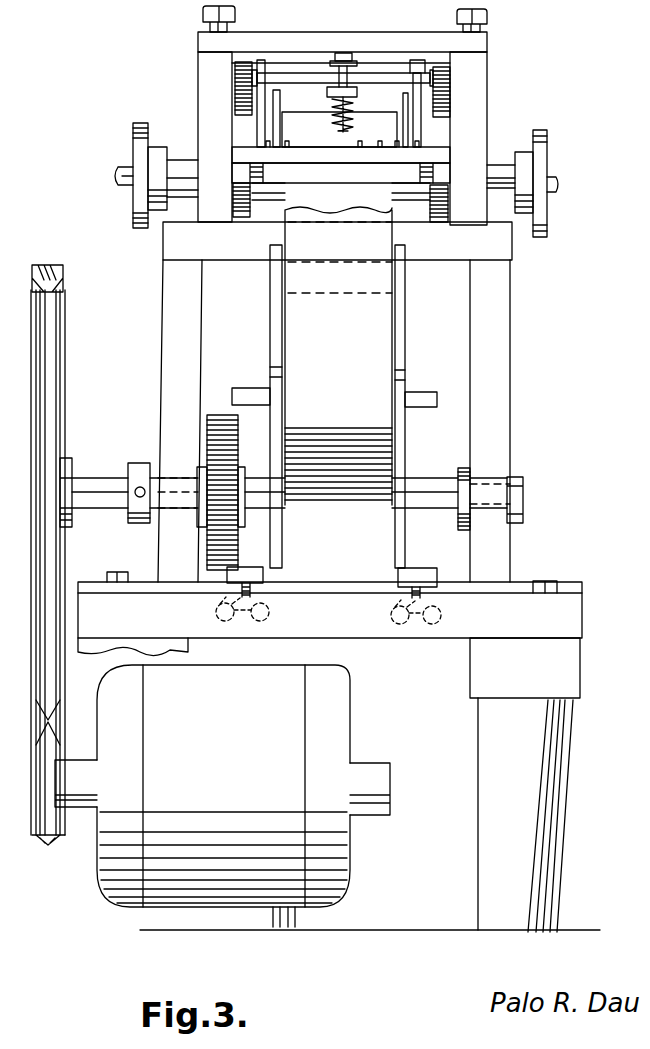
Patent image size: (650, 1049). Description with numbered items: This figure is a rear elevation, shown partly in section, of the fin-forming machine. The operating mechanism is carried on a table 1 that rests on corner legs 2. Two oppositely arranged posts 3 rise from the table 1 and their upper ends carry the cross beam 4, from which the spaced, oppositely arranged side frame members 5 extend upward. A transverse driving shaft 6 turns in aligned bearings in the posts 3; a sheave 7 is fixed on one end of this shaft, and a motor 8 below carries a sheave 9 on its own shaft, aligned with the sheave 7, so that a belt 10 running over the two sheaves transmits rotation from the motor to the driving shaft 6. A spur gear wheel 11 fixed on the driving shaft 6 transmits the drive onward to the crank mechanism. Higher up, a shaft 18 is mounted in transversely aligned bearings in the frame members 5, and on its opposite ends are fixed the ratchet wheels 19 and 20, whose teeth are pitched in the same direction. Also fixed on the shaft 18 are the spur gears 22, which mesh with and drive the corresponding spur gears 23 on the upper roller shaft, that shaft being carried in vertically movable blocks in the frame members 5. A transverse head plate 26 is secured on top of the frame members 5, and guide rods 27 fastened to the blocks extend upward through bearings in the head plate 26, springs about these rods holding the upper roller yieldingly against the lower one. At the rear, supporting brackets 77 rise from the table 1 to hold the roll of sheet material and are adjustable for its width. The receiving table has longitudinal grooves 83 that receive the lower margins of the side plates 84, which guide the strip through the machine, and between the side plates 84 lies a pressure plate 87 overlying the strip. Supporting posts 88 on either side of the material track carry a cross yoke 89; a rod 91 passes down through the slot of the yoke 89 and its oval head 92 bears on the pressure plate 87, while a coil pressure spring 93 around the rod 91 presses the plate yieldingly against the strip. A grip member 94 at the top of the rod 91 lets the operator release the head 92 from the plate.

The table 1 is at (580, 612).
The corner legs 2 is at (575, 738).
The posts 3 is at (176, 350).
The cross beam 4 is at (170, 243).
The side frame members 5 is at (212, 85).
The driving shaft 6 is at (436, 482).
The sheave 7 is at (58, 375).
The motor 8 is at (345, 685).
The sheave 9 is at (58, 823).
The belt 10 is at (48, 265).
The spur gear wheel 11 is at (218, 415).
The shaft 18 is at (503, 167).
The ratchet wheel 19 is at (133, 138).
The ratchet wheel 20 is at (548, 166).
The spur gears 22 is at (232, 200).
The spur gears 23 is at (233, 62).
The head plate 26 is at (488, 46).
The guide rods 27 is at (235, 22).
The supporting brackets 77 is at (276, 330).
The longitudinal grooves 83 is at (250, 148).
The side plates 84 is at (298, 122).
The pressure plate 87 is at (305, 138).
The supporting posts 88 is at (255, 112).
The cross yoke 89 is at (412, 70).
The rod 91 is at (338, 118).
The oval head 92 is at (350, 133).
The coil pressure spring 93 is at (358, 95).
The grip member 94 is at (342, 53).